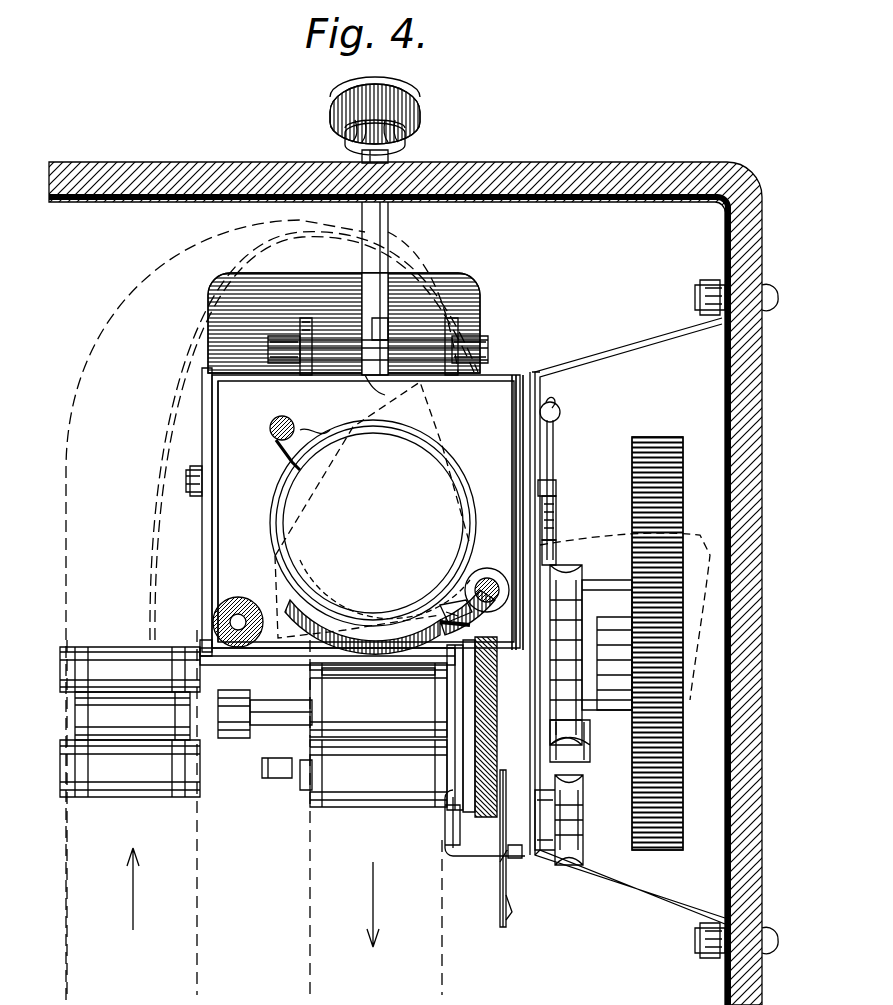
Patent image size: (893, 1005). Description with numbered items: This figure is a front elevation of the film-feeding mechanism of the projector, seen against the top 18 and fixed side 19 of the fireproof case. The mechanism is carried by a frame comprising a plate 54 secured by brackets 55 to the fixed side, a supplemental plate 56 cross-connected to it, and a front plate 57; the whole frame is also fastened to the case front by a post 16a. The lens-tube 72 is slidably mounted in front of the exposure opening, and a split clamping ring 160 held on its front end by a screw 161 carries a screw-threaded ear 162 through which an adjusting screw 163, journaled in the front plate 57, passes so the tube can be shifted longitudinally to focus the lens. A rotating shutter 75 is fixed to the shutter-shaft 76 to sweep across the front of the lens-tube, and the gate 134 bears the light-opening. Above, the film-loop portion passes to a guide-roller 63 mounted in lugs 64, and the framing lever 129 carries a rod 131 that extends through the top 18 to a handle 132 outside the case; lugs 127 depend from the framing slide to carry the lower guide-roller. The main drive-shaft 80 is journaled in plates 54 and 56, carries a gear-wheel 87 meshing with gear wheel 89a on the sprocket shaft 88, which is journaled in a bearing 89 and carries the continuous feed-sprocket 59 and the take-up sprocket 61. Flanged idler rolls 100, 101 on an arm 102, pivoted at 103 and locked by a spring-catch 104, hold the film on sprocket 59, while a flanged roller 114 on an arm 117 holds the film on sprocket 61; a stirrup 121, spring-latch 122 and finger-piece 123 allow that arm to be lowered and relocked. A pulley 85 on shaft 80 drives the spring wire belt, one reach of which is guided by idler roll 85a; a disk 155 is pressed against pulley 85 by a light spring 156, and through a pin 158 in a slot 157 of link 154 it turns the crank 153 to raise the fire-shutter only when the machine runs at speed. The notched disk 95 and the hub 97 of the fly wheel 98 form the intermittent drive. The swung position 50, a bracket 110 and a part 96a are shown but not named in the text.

The top 18 is at (520, 182).
The fixed side 19 is at (728, 382).
The handle 132 is at (418, 112).
The rod 131 is at (388, 230).
The gate 134 is at (210, 340).
The swung position outline 50 is at (78, 452).
The guide-roller 63 is at (432, 362).
The lugs 64 is at (488, 352).
The lever 129 is at (386, 396).
The supplemental plate 56 is at (214, 510).
The front plate 57 is at (236, 511).
The plate 54 is at (520, 456).
The arm 102 is at (204, 550).
The pivot 103 is at (188, 480).
The spring-catch 104 is at (202, 636).
The lens-tube 72 is at (285, 520).
The split clamping ring 160 is at (455, 458).
The light spring 156 is at (510, 555).
The adjusting screw 163 is at (272, 420).
The screw-threaded ear 162 is at (312, 432).
The post 16a is at (238, 596).
The shutter-shaft 76 is at (465, 578).
The screw 161 is at (418, 605).
The rotating shutter 75 is at (285, 574).
The flanged idler roll 101 is at (130, 669).
The continuous feed-sprocket 59 is at (132, 716).
The flanged idler roll 100 is at (130, 768).
The main drive-shaft 80 is at (288, 665).
The shaft 88 is at (281, 712).
The bearing 89 is at (234, 740).
The lugs 127 is at (272, 780).
The take-up sprocket 61 is at (378, 700).
The gear-wheel 87 is at (415, 675).
The flanged roller 114 is at (378, 773).
The gear wheel 89a is at (440, 765).
The arm 117 is at (472, 812).
The bracket 110 is at (500, 810).
The stirrup 121 is at (500, 908).
The spring-latch 122 is at (518, 858).
The finger-piece 123 is at (512, 912).
The brackets 55 is at (618, 350).
The crank 153 is at (556, 405).
The link 154 is at (554, 452).
The pin 158 is at (556, 488).
The slot 157 is at (556, 508).
The disk 155 is at (556, 545).
The pulley 85 is at (584, 568).
The notched disk 95 is at (586, 590).
The hub 97 is at (614, 652).
The fly wheel 98 is at (657, 643).
The pulley 96a is at (588, 730).
The idler roll 85a is at (583, 812).